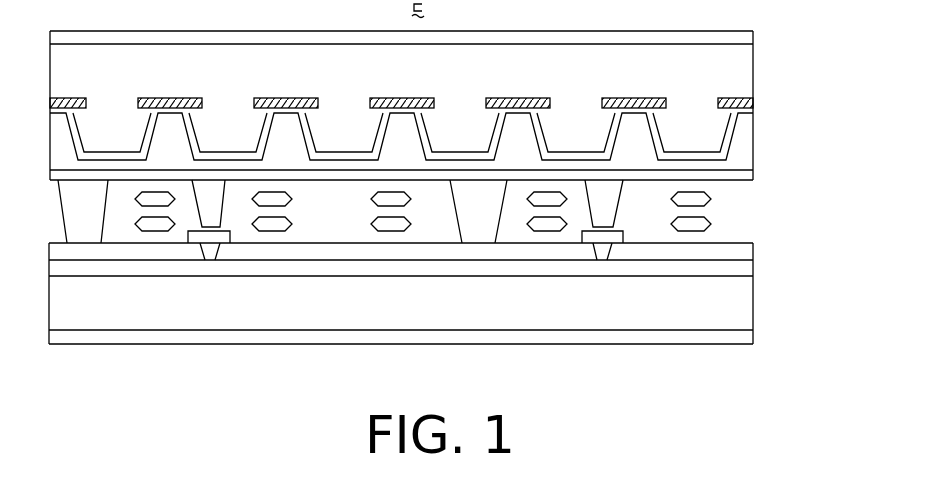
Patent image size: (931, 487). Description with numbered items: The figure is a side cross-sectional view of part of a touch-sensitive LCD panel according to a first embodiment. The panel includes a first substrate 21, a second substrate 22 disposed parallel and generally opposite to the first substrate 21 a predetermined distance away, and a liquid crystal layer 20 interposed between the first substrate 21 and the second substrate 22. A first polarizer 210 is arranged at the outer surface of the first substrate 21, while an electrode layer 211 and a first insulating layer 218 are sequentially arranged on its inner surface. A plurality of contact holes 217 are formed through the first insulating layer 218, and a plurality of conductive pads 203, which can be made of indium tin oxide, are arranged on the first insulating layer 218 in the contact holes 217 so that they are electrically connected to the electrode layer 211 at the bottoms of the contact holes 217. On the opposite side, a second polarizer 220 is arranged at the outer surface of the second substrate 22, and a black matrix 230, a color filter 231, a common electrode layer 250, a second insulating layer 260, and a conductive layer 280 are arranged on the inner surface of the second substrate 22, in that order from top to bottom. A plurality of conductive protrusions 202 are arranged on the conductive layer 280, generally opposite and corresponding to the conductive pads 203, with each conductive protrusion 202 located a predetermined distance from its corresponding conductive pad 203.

The second polarizer 220 is at (745, 39).
The second substrate 22 is at (742, 72).
The black matrix 230 is at (748, 107).
The color filter 231 is at (715, 122).
The common electrode layer 250 is at (728, 147).
The second insulating layer 260 is at (738, 165).
The conductive layer 280 is at (753, 180).
The liquid crystal layer 20 is at (713, 192).
The conductive protrusions 202 is at (607, 197).
The conductive pads 203 is at (608, 243).
The contact holes 217 is at (595, 252).
The first insulating layer 218 is at (735, 252).
The electrode layer 211 is at (738, 269).
The first substrate 21 is at (732, 300).
The first polarizer 210 is at (735, 338).